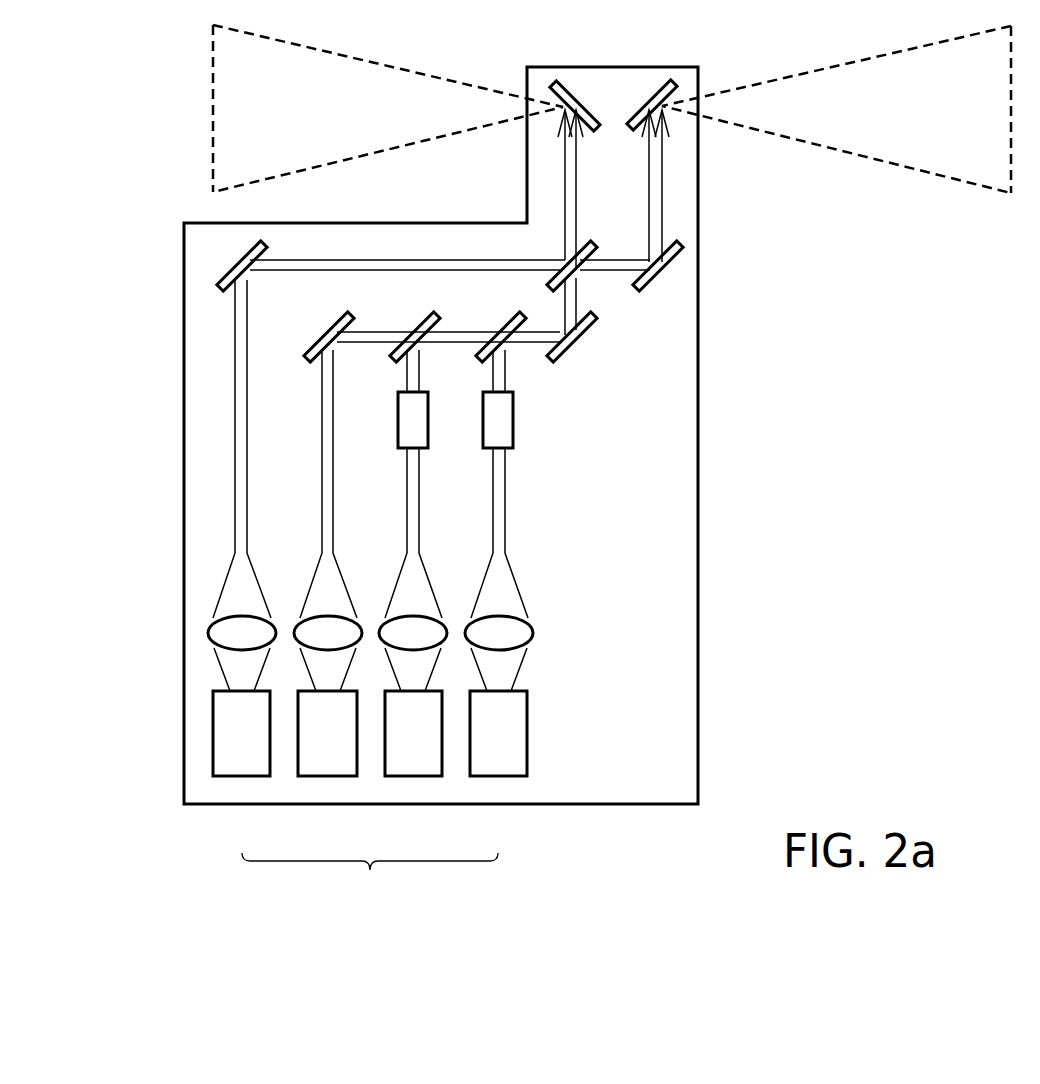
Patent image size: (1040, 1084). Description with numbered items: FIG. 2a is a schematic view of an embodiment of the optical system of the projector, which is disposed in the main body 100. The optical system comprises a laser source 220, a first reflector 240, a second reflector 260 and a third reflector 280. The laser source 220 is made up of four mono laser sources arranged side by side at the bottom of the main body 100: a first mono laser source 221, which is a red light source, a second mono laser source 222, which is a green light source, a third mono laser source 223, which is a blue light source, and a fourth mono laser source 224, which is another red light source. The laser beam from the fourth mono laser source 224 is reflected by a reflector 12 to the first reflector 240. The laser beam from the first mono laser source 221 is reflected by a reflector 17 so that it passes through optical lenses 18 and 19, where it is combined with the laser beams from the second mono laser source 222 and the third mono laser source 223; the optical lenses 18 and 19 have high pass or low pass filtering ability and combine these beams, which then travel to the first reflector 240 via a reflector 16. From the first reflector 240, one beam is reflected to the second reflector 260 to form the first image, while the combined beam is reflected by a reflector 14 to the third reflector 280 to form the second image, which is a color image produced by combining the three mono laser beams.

The main body 100 is at (698, 532).
The reflector 12 is at (243, 262).
The reflector 14 is at (668, 265).
The reflector 16 is at (578, 342).
The reflector 17 is at (342, 316).
The optical lens 18 is at (427, 318).
The optical lens 19 is at (512, 318).
The first reflector 240 is at (577, 275).
The second reflector 260 is at (575, 100).
The third reflector 280 is at (648, 98).
The laser source 220 is at (370, 878).
The first mono laser source 221 is at (327, 762).
The second mono laser source 222 is at (413, 762).
The third mono laser source 223 is at (499, 762).
The fourth mono laser source 224 is at (241, 762).